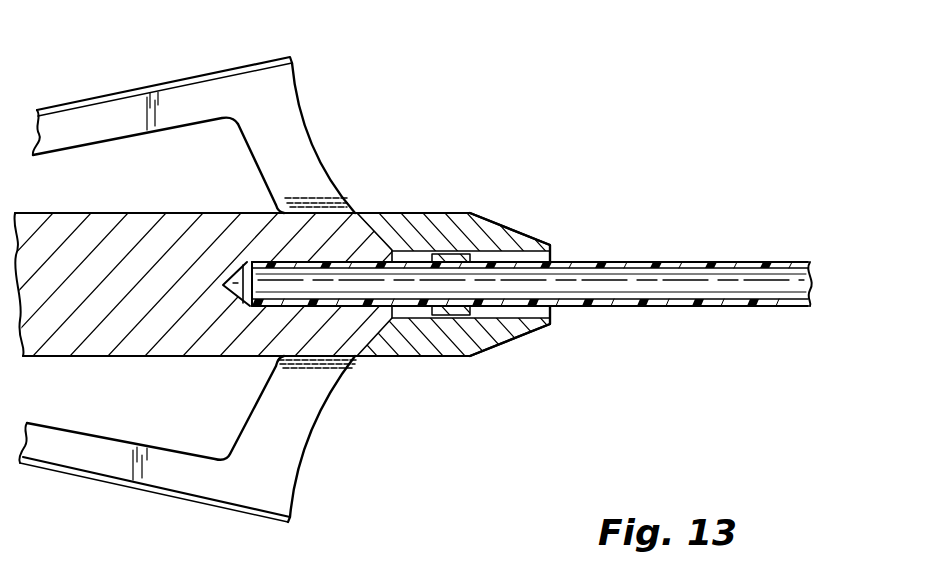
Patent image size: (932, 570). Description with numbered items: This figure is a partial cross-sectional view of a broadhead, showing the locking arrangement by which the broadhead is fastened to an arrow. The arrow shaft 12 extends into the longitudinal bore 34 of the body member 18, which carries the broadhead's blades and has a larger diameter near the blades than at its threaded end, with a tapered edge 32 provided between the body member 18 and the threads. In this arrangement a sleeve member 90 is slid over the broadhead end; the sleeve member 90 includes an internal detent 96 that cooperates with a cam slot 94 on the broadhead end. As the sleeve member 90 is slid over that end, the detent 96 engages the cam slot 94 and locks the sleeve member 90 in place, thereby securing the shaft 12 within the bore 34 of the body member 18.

The shaft 12 is at (680, 262).
The body member 18 is at (113, 358).
The tapered edge 32 is at (383, 227).
The longitudinal bore 34 is at (236, 274).
The sleeve member 90 is at (530, 337).
The cam slot 94 is at (447, 253).
The internal detent 96 is at (455, 315).